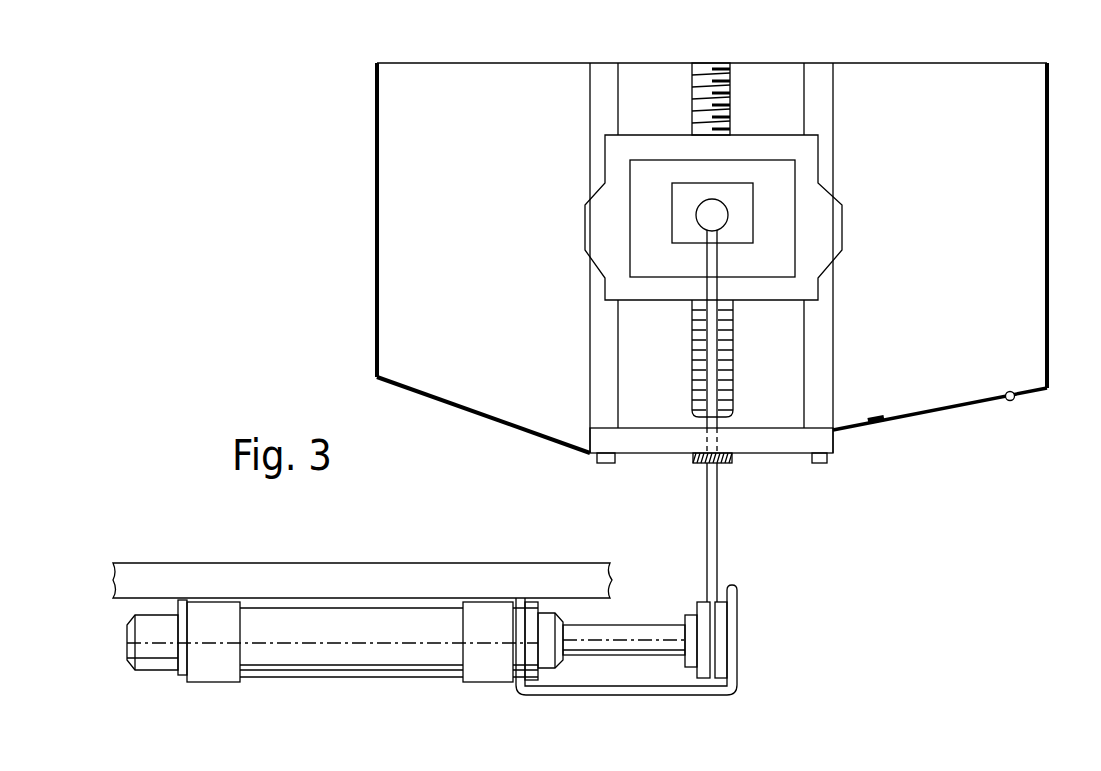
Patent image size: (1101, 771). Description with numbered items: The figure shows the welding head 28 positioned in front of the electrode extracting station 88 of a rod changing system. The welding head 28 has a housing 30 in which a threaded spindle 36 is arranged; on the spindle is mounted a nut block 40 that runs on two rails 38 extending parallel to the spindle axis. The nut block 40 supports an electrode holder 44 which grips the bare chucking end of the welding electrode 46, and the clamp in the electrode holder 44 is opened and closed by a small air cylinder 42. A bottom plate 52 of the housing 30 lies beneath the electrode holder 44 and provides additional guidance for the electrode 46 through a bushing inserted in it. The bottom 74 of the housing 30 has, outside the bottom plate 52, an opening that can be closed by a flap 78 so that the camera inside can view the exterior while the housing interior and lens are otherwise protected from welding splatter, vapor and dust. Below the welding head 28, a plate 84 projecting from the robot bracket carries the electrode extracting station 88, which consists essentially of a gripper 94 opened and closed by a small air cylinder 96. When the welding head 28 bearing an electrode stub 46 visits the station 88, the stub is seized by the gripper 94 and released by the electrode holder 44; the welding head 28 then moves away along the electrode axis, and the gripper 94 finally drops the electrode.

The welding head 28 is at (366, 242).
The housing 30 is at (1049, 115).
The threaded spindle 36 is at (733, 110).
The rails 38 is at (604, 362).
The nut block 40 is at (613, 152).
The small air cylinder 42 is at (719, 219).
The electrode holder 44 is at (683, 227).
The welding electrode 46 is at (712, 366).
The bottom plate 52 is at (676, 445).
The bottom 74 is at (472, 413).
The flap 78 is at (943, 411).
The plate 84 is at (344, 577).
The electrode extracting station 88 is at (490, 690).
The gripper 94 is at (743, 568).
The small air cylinder 96 is at (323, 655).